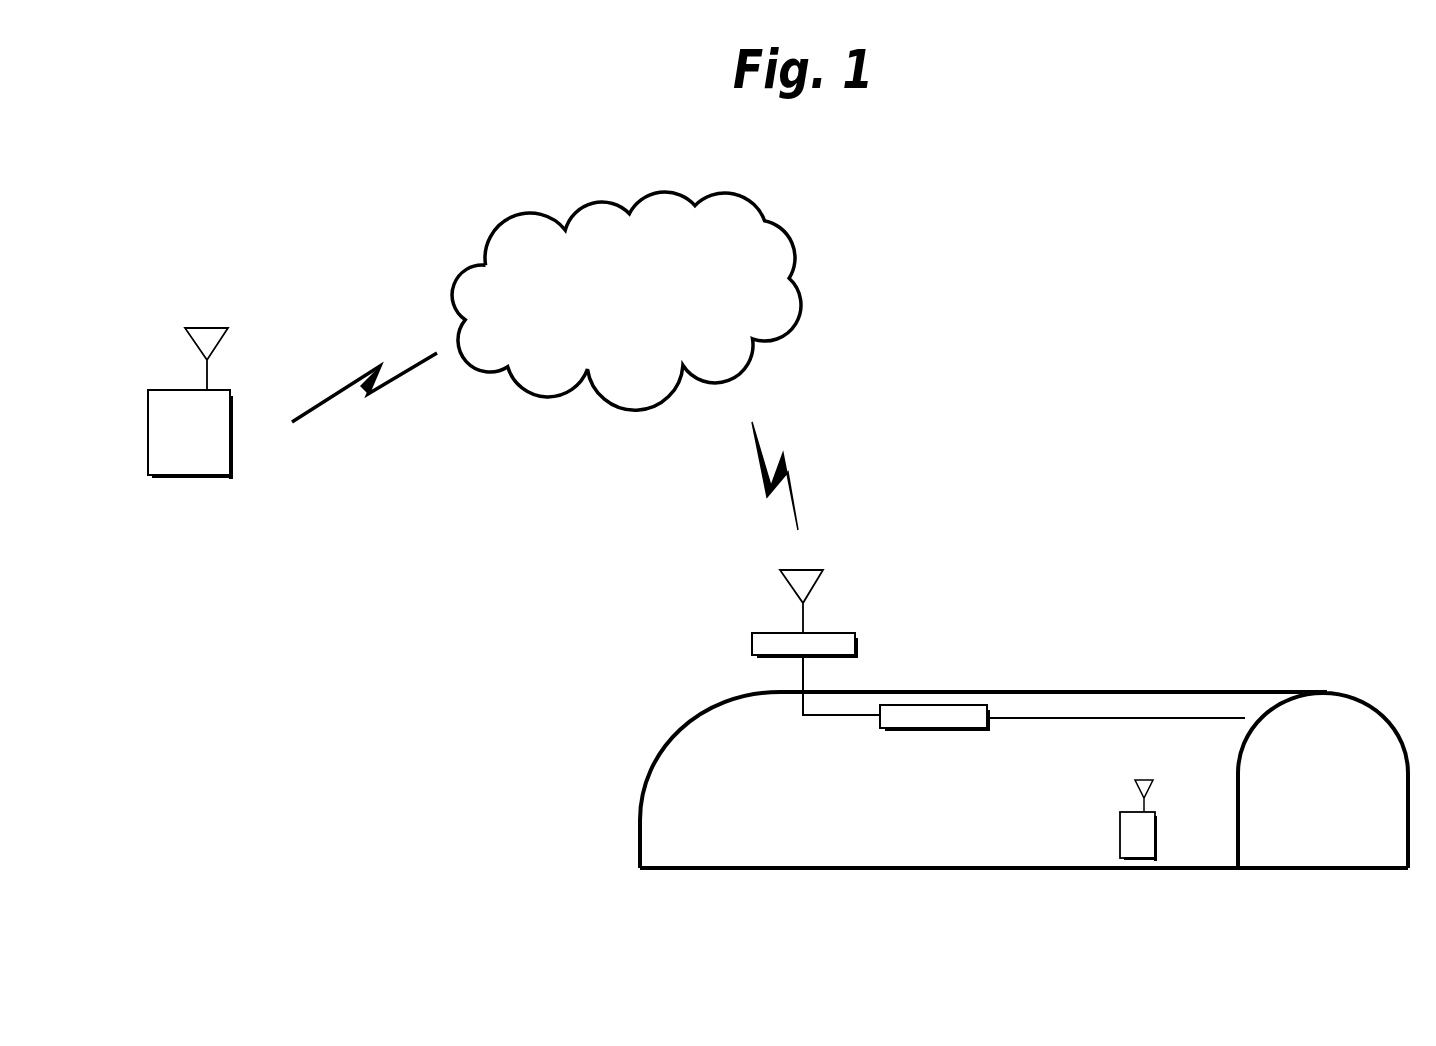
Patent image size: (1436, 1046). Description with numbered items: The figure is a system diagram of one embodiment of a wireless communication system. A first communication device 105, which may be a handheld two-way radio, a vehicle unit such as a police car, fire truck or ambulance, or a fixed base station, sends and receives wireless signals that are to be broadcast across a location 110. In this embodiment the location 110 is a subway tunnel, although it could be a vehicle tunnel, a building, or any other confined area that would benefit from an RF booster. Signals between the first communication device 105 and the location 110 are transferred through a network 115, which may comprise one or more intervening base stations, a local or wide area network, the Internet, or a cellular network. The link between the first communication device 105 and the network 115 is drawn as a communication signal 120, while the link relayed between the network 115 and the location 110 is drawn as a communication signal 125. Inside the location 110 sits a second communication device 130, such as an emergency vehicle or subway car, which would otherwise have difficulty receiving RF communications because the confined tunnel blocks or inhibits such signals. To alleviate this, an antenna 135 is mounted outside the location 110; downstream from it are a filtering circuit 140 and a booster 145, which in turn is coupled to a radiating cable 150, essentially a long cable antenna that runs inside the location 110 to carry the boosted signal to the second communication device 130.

The first communication device 105 is at (188, 478).
The location 110 is at (678, 768).
The network 115 is at (626, 301).
The communication signal 120 is at (363, 400).
The communication signal 125 is at (790, 467).
The second communication device 130 is at (1147, 872).
The antenna 135 is at (780, 567).
The filtering circuit 140 is at (752, 643).
The booster 145 is at (937, 735).
The radiating cable 150 is at (1072, 720).